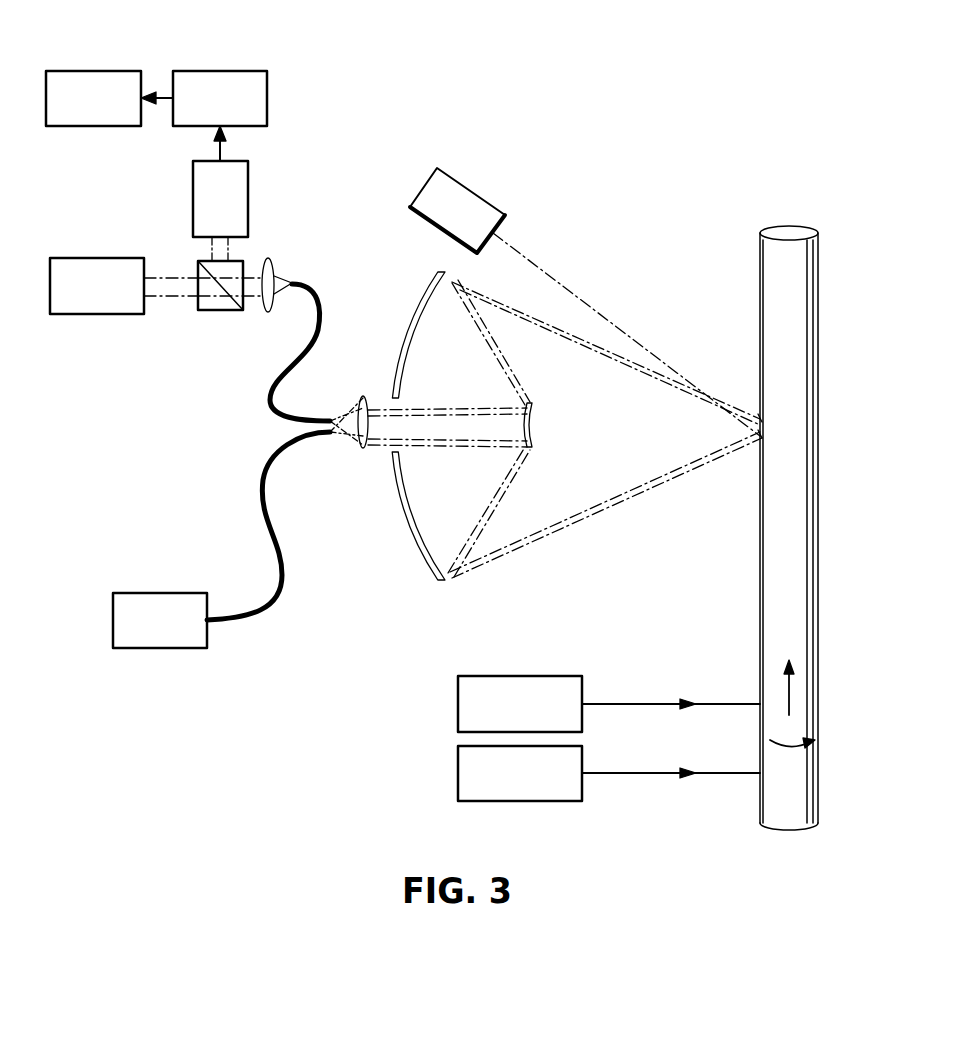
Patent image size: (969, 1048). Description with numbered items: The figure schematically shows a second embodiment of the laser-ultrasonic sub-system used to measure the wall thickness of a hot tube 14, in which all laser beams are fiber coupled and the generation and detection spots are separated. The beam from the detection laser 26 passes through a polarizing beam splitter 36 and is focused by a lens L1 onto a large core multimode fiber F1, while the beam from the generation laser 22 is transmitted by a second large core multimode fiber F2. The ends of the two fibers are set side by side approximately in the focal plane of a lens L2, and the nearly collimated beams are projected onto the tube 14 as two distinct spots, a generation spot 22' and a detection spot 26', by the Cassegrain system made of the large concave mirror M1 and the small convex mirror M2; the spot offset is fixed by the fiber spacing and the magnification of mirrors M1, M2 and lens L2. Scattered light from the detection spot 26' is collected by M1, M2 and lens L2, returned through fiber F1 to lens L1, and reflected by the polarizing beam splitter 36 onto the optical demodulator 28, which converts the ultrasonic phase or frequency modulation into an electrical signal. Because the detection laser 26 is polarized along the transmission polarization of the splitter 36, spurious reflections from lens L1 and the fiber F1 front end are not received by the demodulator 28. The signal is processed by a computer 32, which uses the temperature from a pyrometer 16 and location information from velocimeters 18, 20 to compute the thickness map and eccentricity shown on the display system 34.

The tube 14 is at (808, 250).
The pyrometer 16 is at (458, 180).
The velocimeter 18 is at (458, 704).
The velocimeter 20 is at (458, 772).
The generation laser 22 is at (160, 590).
The generation spot 22' is at (824, 478).
The detection laser 26 is at (124, 256).
The detection spot 26' is at (821, 396).
The optical demodulator 28 is at (248, 190).
The computer 32 is at (197, 71).
The display system 34 is at (70, 71).
The polarizing beam splitter 36 is at (198, 308).
The lens L1 is at (275, 266).
The lens L2 is at (360, 450).
The large core multimode fiber F1 is at (277, 378).
The large core multimode fiber F2 is at (283, 555).
The large concave mirror M1 is at (415, 315).
The small convex mirror M2 is at (545, 386).